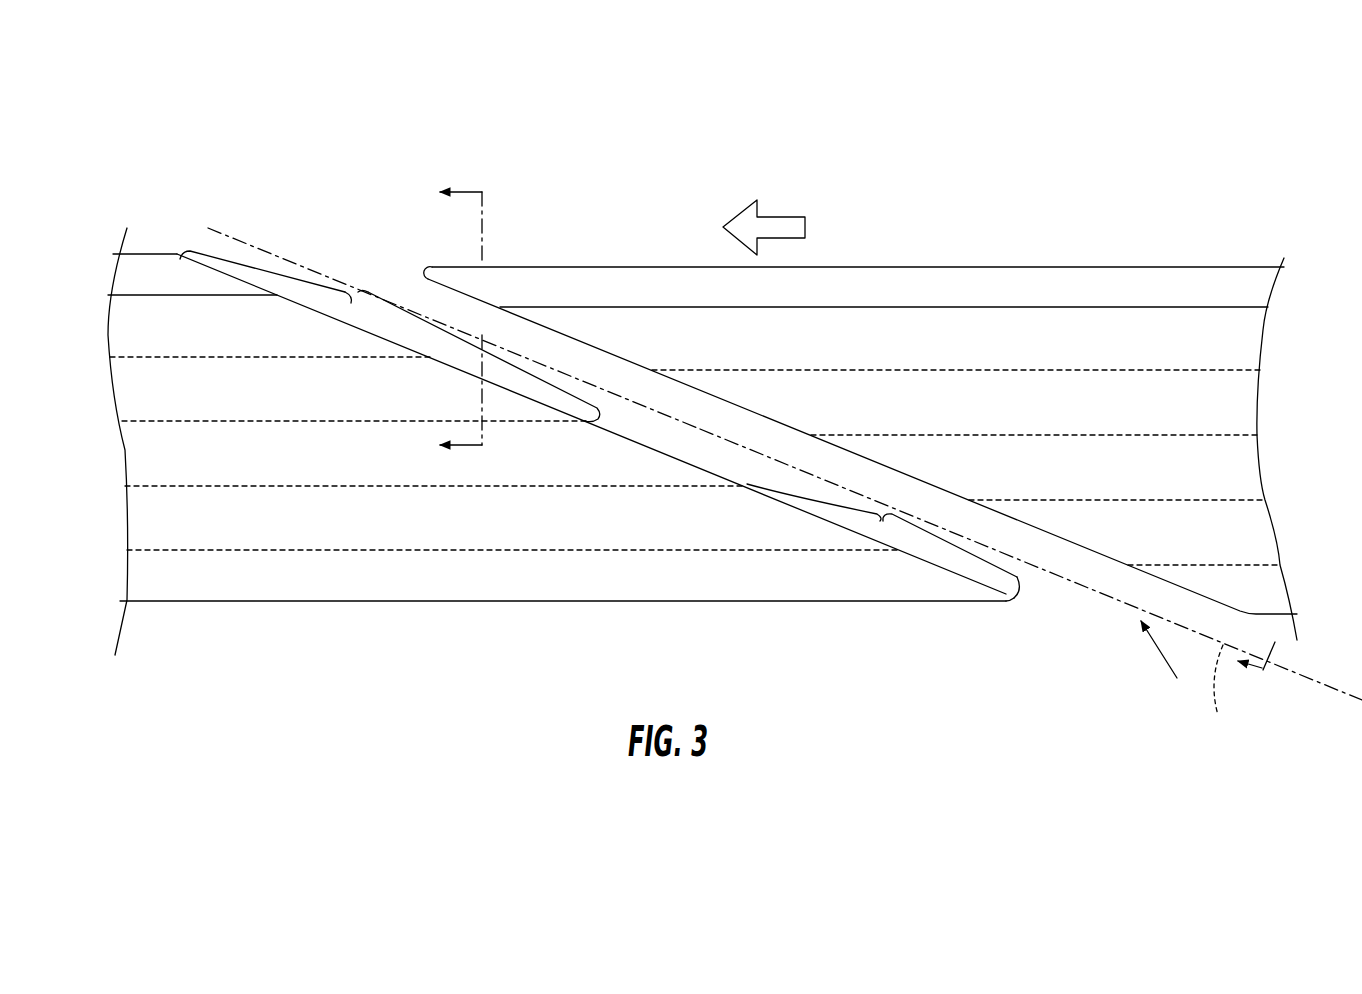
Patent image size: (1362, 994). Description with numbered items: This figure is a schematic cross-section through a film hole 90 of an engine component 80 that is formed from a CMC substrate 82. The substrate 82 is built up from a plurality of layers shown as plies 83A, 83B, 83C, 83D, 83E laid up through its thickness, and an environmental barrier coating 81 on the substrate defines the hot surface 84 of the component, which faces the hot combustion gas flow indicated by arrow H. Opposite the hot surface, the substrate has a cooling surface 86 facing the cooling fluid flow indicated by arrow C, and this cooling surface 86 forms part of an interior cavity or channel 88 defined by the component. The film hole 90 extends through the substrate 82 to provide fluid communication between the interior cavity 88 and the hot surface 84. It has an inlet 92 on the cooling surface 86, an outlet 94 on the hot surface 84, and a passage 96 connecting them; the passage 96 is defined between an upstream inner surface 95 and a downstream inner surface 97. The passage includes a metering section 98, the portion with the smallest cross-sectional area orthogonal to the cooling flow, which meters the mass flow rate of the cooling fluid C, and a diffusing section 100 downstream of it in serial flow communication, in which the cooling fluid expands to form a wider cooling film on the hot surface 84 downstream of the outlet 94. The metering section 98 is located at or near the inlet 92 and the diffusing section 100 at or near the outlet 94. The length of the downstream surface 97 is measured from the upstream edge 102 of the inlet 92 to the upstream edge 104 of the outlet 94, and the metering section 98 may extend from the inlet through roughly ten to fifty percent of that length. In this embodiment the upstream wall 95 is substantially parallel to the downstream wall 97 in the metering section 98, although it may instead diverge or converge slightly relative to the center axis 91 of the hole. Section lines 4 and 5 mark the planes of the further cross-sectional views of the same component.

The engine component 80 is at (1032, 178).
The environmental barrier coating 81 is at (1075, 285).
The substrate 82 is at (1162, 405).
The ply 83A is at (137, 325).
The ply 83B is at (221, 405).
The ply 83C is at (221, 475).
The ply 83D is at (221, 537).
The ply 83E is at (220, 583).
The hot surface 84 is at (148, 248).
The cooling surface 86 is at (785, 607).
The interior cavity 88 is at (977, 705).
The film hole 90 is at (408, 281).
The center axis 91 is at (1223, 698).
The inlet 92 is at (1088, 614).
The outlet 94 is at (296, 236).
The upstream inner surface 95 is at (856, 458).
The passage 96 is at (702, 433).
The downstream inner surface 97 is at (617, 427).
The metering section 98 is at (895, 515).
The diffusing section 100 is at (358, 303).
The upstream edge of the inlet 102 is at (1012, 605).
The upstream edge of the outlet 104 is at (194, 250).
The hot gas flow arrow H is at (773, 213).
The cooling fluid flow arrow C is at (1160, 657).
The section line 4 is at (1256, 674).
The section line 5 is at (461, 318).